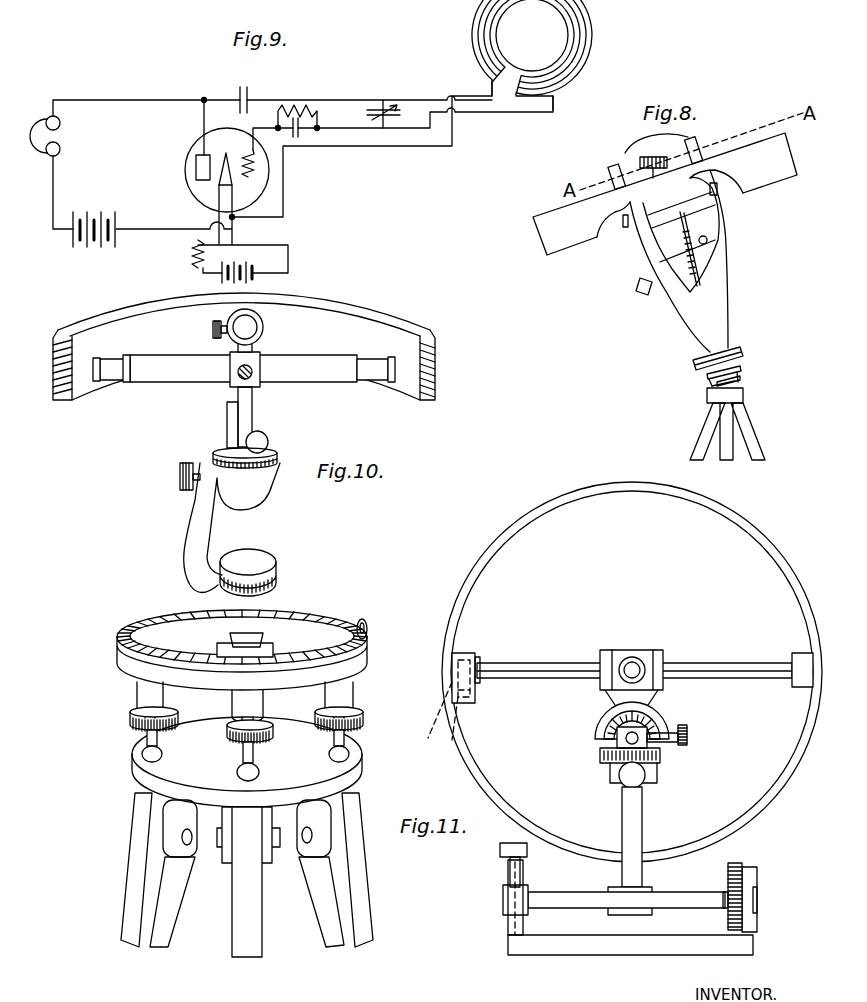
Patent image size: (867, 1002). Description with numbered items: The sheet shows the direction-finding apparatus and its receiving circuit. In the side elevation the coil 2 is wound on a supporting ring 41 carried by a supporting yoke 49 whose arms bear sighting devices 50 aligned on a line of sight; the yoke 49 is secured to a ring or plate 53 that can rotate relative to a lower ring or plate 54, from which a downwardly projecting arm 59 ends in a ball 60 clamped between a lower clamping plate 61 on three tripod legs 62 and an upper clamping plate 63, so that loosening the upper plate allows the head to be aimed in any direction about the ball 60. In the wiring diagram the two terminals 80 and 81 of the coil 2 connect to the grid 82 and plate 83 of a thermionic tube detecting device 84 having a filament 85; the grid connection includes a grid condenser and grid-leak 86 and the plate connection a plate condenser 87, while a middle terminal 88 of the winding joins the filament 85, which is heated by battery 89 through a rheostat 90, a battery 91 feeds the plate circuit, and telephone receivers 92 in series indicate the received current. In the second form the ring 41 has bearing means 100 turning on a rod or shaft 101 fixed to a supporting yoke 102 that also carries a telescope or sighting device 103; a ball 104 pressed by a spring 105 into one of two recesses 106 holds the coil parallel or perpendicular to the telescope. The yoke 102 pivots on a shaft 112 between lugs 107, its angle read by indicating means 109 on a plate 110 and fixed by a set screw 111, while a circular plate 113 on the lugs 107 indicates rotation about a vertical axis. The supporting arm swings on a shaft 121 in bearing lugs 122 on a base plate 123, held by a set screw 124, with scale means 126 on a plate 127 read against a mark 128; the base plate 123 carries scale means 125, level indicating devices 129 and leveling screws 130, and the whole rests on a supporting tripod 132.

In FIG. 8, the coil 2 is at (562, 238).
In FIG. 10, the coil 2 is at (436, 368).
In FIG. 10, the supporting ring 41 is at (412, 352).
In FIG. 8, the supporting yoke 49 is at (723, 282).
In FIG. 8, the sighting devices 50 is at (633, 145).
In FIG. 8, the ring or plate 53 is at (737, 348).
In FIG. 8, the lower ring or plate 54 is at (743, 355).
In FIG. 8, the downwardly projecting arm 59 is at (710, 377).
In FIG. 8, the ball 60 is at (737, 380).
In FIG. 8, the lower clamping plate 61 is at (715, 393).
In FIG. 8, the tripod legs 62 is at (732, 443).
In FIG. 8, the upper clamping plate 63 is at (710, 383).
In FIG. 9, the terminal 80 is at (553, 95).
In FIG. 9, the terminal 81 is at (512, 67).
In FIG. 9, the grid 82 is at (257, 167).
In FIG. 9, the plate 83 is at (195, 167).
In FIG. 9, the thermionic tube detecting device 84 is at (221, 128).
In FIG. 9, the filament 85 is at (225, 182).
In FIG. 9, the grid condenser and grid-leak 86 is at (322, 115).
In FIG. 9, the plate condenser 87 is at (248, 100).
In FIG. 9, the terminal 88 is at (500, 70).
In FIG. 9, the battery 89 is at (255, 267).
In FIG. 9, the rheostat 90 is at (193, 257).
In FIG. 9, the battery 91 is at (87, 248).
In FIG. 9, the telephone receivers 92 is at (62, 143).
In FIG. 10, the bearing means 100 is at (265, 328).
In FIG. 11, the bearing means 100 is at (463, 653).
In FIG. 10, the rod or shaft 101 is at (240, 333).
In FIG. 11, the rod or shaft 101 is at (532, 673).
In FIG. 10, the supporting yoke 102 is at (243, 407).
In FIG. 11, the supporting yoke 102 is at (603, 687).
In FIG. 10, the telescope or sighting device 103 is at (143, 373).
In FIG. 11, the telescope or sighting device 103 is at (633, 663).
In FIG. 11, the ball 104 is at (453, 703).
In FIG. 11, the spring 105 is at (475, 695).
In FIG. 11, the recesses 106 is at (452, 672).
In FIG. 10, the lugs 107 is at (227, 445).
In FIG. 11, the lugs 107 is at (620, 732).
In FIG. 11, the indicating means 109 is at (657, 700).
In FIG. 11, the plate 110 is at (657, 743).
In FIG. 10, the set screw 111 is at (262, 442).
In FIG. 11, the shaft 112 is at (662, 763).
In FIG. 10, the circular plate 113 is at (273, 467).
In FIG. 11, the circular plate 113 is at (602, 755).
In FIG. 11, the shaft 121 is at (692, 900).
In FIG. 11, the bearing lugs 122 is at (517, 917).
In FIG. 10, the base plate 123 is at (140, 670).
In FIG. 11, the base plate 123 is at (738, 945).
In FIG. 11, the set screw 124 is at (505, 845).
In FIG. 10, the scale means 125 is at (168, 617).
In FIG. 11, the scale means 126 is at (740, 863).
In FIG. 11, the plate 127 is at (730, 918).
In FIG. 10, the mark 128 is at (270, 583).
In FIG. 10, the level indicating devices 129 is at (367, 637).
In FIG. 10, the leveling screws 130 is at (363, 722).
In FIG. 10, the supporting tripod 132 is at (243, 878).